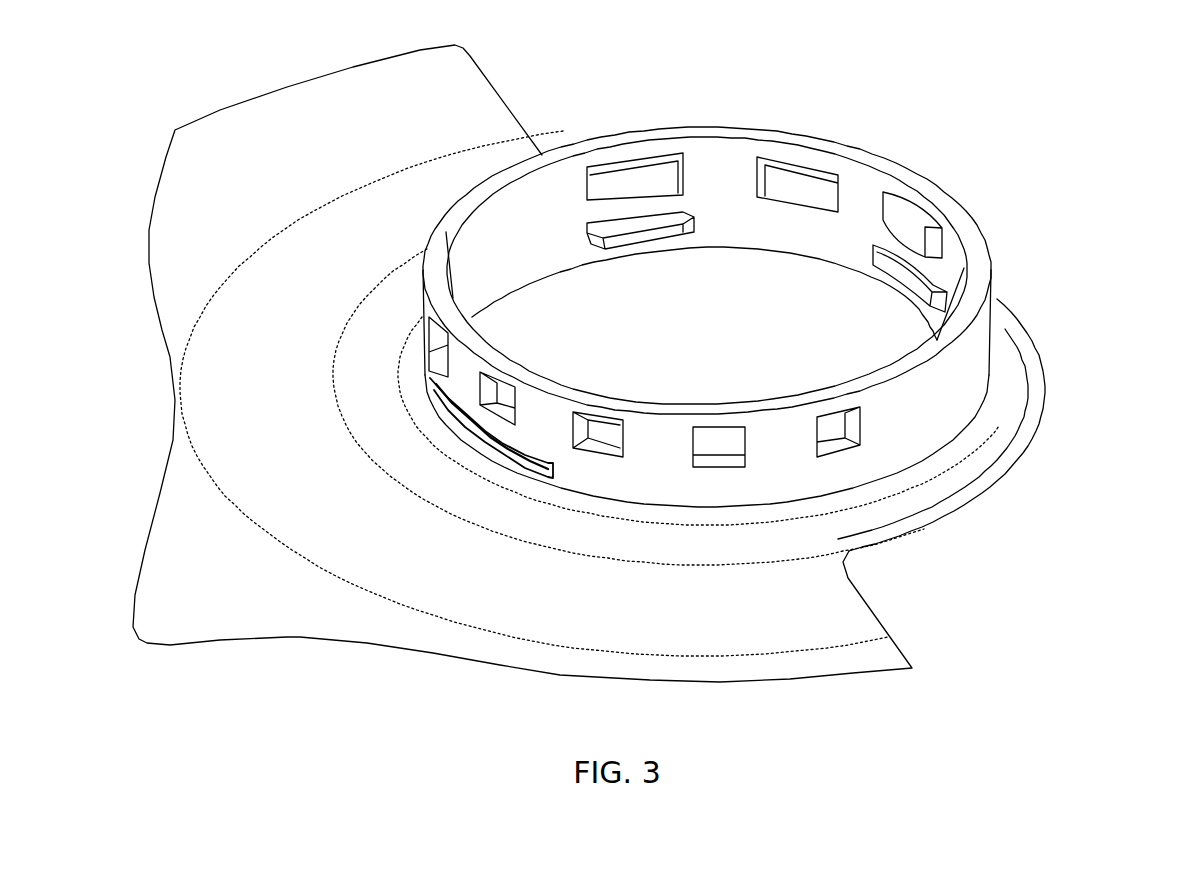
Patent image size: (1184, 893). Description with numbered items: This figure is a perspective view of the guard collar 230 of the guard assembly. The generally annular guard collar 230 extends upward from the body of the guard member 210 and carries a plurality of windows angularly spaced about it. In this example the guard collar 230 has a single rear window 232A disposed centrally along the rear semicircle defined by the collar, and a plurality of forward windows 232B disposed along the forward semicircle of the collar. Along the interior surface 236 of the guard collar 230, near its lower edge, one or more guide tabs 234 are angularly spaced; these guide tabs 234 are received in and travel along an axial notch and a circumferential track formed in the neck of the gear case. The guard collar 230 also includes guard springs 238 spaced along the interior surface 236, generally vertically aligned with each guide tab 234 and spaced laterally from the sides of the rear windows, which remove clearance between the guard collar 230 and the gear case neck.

The guard member 210 is at (195, 324).
The guard collar 230 is at (979, 360).
The rear window 232A is at (725, 448).
The forward windows 232B is at (815, 182).
The guide tabs 234 is at (657, 230).
The interior surface 236 is at (562, 163).
The guard springs 238 is at (628, 172).